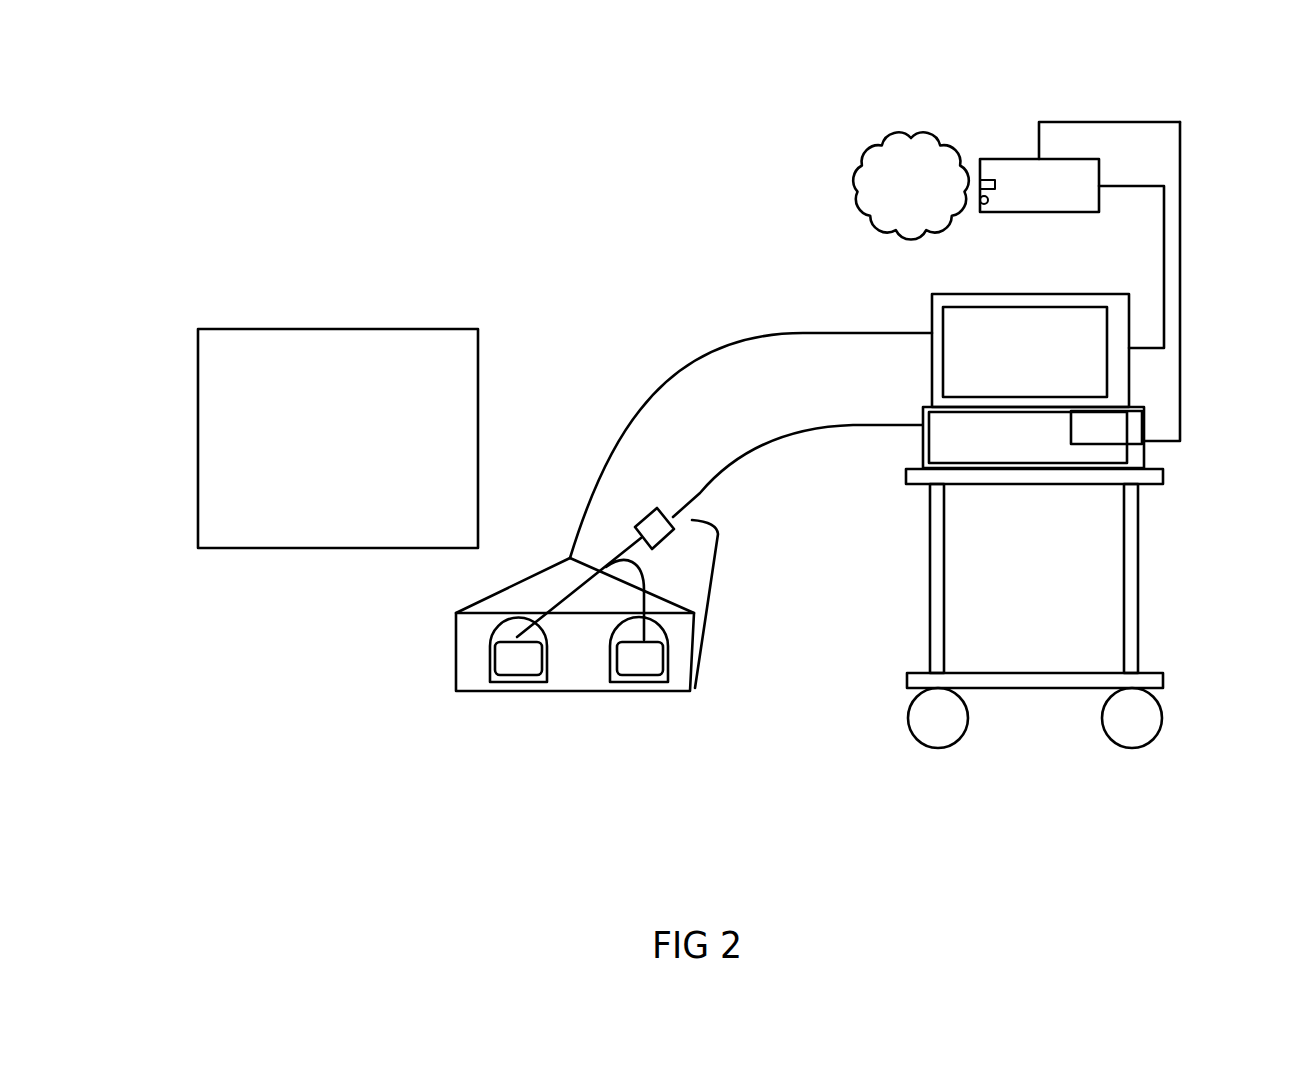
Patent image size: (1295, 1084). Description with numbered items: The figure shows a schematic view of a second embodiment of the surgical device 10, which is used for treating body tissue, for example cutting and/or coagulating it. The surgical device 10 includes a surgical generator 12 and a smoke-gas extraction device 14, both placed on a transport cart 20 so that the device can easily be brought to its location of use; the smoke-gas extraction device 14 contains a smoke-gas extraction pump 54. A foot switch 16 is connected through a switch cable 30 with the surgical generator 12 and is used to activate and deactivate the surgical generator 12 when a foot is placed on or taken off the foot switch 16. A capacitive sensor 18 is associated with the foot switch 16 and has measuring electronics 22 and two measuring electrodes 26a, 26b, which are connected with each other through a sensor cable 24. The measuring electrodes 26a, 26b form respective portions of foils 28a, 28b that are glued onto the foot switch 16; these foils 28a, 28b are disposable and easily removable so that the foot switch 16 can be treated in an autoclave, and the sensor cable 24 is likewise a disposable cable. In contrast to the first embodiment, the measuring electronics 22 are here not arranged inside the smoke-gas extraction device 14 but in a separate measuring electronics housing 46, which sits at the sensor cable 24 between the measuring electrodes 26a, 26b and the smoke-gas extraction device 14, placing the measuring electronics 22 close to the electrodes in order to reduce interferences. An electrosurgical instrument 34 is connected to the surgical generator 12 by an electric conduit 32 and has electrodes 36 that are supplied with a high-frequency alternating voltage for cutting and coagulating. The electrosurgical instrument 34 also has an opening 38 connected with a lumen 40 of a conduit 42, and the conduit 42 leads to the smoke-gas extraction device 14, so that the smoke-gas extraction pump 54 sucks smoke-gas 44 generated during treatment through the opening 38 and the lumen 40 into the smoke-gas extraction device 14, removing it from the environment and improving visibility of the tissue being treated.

The surgical device 10 is at (515, 350).
The surgical generator 12 is at (1055, 315).
The smoke-gas extraction device 14 is at (1090, 454).
The foot switch 16 is at (478, 629).
The capacitive sensor 18 is at (707, 611).
The transport cart 20 is at (1125, 578).
The measuring electronics 22 is at (661, 526).
The sensor cable 24 is at (758, 453).
The measuring electrode 26a is at (522, 660).
The measuring electrode 26b is at (647, 660).
The foil 28a is at (500, 683).
The foil 28b is at (633, 683).
The switch cable 30 is at (853, 330).
The electric conduit 32 is at (1165, 278).
The electrosurgical instrument 34 is at (1038, 187).
The electrodes 36 is at (987, 180).
The opening 38 is at (988, 203).
The lumen 40 is at (1067, 122).
The conduit 42 is at (1182, 168).
The smoke-gas 44 is at (898, 160).
The measuring electronics housing 46 is at (640, 516).
The smoke-gas extraction pump 54 is at (1120, 426).